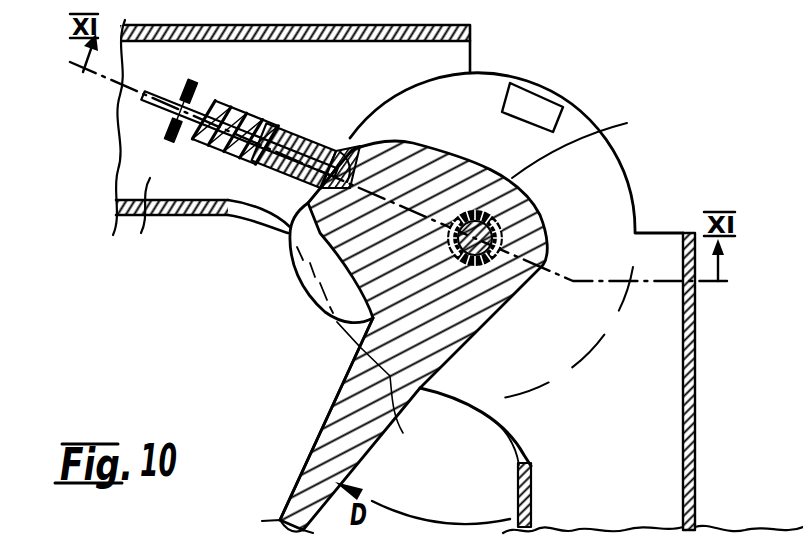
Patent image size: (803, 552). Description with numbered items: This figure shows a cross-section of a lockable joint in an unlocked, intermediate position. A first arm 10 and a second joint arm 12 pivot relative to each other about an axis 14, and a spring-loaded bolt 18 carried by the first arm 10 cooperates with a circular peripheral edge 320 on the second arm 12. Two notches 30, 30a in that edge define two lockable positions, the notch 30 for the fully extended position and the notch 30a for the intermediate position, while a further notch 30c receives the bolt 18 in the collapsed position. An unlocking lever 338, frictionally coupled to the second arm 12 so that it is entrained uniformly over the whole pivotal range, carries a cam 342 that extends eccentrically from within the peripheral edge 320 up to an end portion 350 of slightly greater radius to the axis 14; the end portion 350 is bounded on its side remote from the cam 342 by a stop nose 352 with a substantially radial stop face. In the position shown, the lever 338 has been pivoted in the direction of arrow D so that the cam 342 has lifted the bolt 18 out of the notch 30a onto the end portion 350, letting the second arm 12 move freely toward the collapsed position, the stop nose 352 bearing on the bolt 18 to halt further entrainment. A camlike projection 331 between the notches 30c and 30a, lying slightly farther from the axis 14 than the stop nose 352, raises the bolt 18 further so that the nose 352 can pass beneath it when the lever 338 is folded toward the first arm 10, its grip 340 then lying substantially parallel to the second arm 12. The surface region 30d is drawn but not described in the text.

The first arm 10 is at (291, 147).
The second joint arm 12 is at (667, 343).
The axis 14 is at (505, 225).
The bolt 18 is at (294, 140).
The notch 30 is at (527, 95).
The notch 30a is at (346, 150).
The notch 30c is at (403, 433).
The cam surface portion 30d is at (360, 338).
The peripheral edge 320 is at (623, 172).
The camlike projection 331 is at (302, 297).
The unlocking lever 338 is at (330, 418).
The grip 340 is at (290, 505).
The cam 342 is at (592, 143).
The end portion 350 is at (318, 165).
The stop nose 352 is at (290, 232).